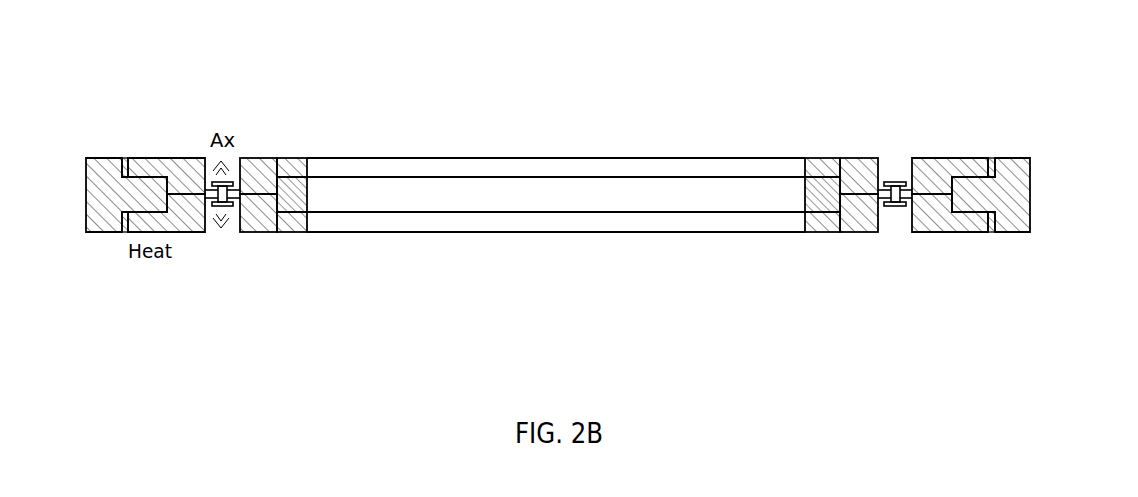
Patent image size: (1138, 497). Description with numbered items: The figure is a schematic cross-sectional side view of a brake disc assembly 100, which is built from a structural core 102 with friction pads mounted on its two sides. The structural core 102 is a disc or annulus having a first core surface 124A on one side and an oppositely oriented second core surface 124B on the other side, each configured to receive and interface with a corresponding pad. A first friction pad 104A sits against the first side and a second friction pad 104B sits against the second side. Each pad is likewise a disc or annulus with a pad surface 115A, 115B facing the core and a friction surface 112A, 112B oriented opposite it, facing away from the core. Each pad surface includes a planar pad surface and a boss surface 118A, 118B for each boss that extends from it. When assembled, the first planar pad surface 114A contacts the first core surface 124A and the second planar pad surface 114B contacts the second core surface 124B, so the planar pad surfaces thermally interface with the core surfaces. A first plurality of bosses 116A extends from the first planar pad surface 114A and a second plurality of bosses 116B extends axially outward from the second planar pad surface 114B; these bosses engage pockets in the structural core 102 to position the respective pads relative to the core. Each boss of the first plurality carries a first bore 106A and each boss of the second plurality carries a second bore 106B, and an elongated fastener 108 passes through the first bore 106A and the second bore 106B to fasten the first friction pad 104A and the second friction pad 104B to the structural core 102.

The brake disc assembly 100 is at (683, 111).
The structural core 102 is at (1056, 136).
The first friction pad 104A is at (195, 106).
The second friction pad 104B is at (212, 281).
The first bore 106A is at (907, 232).
The second bore 106B is at (907, 232).
The elongated fastener 108 is at (892, 158).
The first friction surface 112A is at (832, 232).
The second friction surface 112B is at (832, 232).
The first planar pad surface 114A is at (283, 232).
The second planar pad surface 114B is at (283, 232).
The pad surface 115A is at (329, 136).
The pad surface 115B is at (328, 269).
The first plurality of bosses 116A is at (857, 232).
The second plurality of bosses 116B is at (857, 232).
The boss surface 118A is at (262, 232).
The boss surface 118B is at (262, 232).
The first core surface 124A is at (303, 232).
The second core surface 124B is at (303, 232).